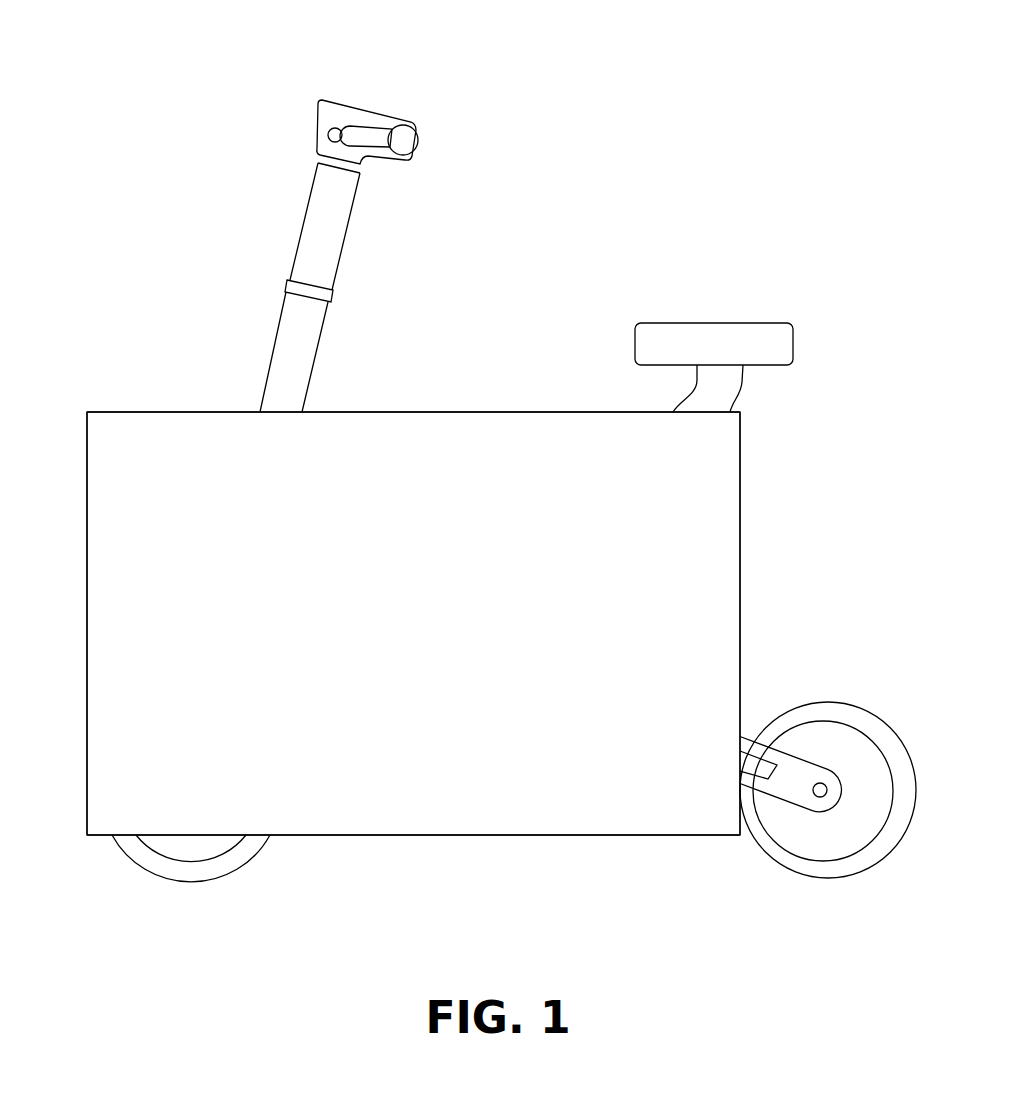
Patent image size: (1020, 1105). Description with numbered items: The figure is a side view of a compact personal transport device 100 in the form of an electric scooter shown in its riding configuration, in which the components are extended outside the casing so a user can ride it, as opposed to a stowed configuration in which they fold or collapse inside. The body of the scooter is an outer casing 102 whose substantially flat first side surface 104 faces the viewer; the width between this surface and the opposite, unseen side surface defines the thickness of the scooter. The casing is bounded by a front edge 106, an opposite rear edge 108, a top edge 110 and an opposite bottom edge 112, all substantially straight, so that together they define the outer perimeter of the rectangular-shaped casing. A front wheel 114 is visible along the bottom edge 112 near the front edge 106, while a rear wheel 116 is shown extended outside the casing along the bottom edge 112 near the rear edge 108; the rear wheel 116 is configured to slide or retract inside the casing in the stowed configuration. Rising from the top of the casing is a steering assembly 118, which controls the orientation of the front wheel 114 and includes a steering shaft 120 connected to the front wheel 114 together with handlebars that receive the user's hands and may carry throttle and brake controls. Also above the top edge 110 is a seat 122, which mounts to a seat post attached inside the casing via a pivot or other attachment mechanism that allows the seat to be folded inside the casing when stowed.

The compact personal transport device 100 is at (600, 222).
The outer casing 102 is at (710, 540).
The first side surface 104 is at (437, 612).
The front edge 106 is at (87, 505).
The rear edge 108 is at (742, 600).
The top edge 110 is at (460, 411).
The bottom edge 112 is at (474, 836).
The front wheel 114 is at (185, 883).
The rear wheel 116 is at (820, 883).
The steering assembly 118 is at (366, 100).
The steering shaft 120 is at (274, 343).
The seat 122 is at (716, 340).